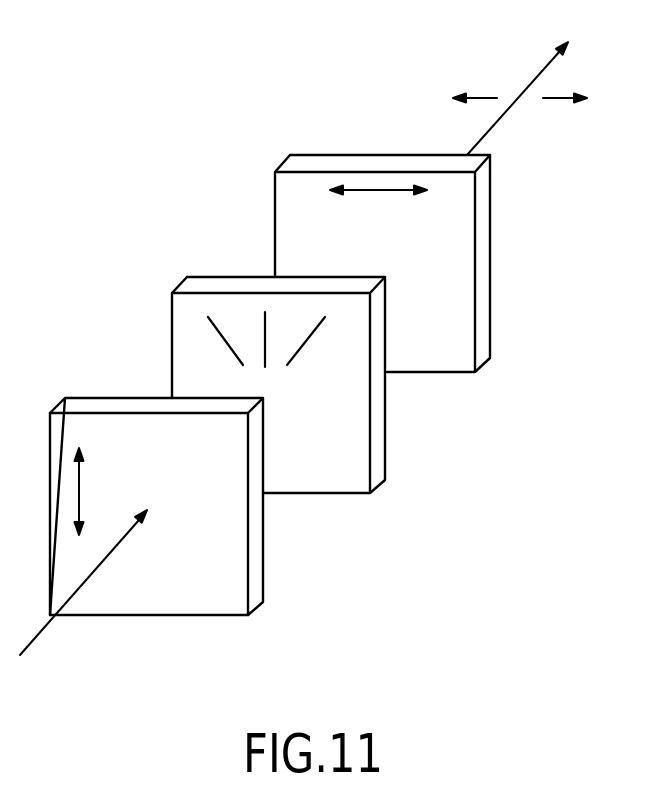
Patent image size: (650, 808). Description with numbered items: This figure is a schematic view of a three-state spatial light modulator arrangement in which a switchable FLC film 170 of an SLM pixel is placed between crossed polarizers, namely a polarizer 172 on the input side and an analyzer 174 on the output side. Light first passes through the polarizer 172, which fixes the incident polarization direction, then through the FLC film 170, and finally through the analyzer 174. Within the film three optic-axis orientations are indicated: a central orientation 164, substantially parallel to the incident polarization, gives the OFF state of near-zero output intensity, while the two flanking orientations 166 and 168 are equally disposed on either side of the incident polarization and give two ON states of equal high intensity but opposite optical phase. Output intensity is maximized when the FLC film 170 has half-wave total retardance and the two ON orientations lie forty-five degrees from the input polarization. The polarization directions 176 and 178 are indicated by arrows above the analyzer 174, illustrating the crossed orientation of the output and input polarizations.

The optic axis 164 is at (265, 325).
The optic axis 166 is at (220, 338).
The optic axis 168 is at (310, 340).
The switchable FLC film 170 is at (378, 448).
The polarizer 172 is at (255, 568).
The analyzer 174 is at (482, 282).
The polarization direction 176 is at (563, 98).
The polarization direction 178 is at (482, 98).